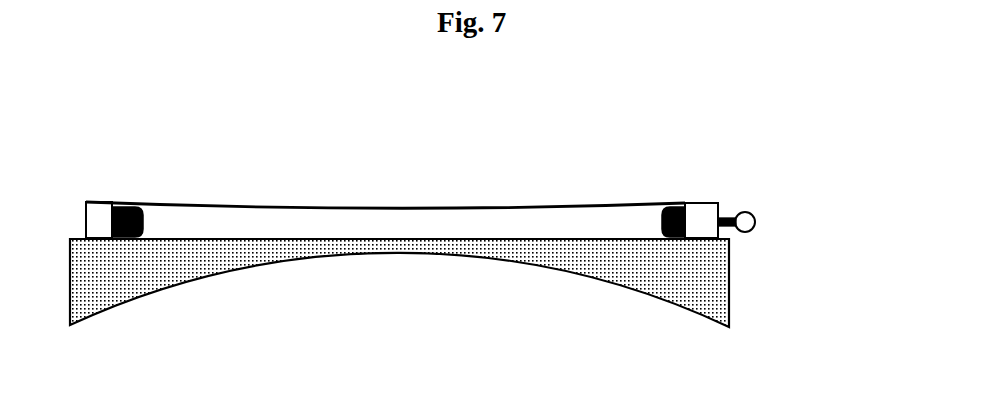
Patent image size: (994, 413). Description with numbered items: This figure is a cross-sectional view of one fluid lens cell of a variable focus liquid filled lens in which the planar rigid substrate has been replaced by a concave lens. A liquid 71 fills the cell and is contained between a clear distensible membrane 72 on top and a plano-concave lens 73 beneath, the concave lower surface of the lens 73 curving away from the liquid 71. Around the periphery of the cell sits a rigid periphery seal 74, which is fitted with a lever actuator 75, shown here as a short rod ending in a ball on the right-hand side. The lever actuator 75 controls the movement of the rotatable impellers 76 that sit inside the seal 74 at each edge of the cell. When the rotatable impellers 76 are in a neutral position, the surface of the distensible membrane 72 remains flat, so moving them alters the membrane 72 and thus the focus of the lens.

The liquid 71 is at (337, 232).
The clear distensible membrane 72 is at (502, 207).
The plano-concave lens 73 is at (700, 287).
The frame 74 is at (710, 213).
The lever actuator 75 is at (757, 217).
The rotatable impellers 76 is at (475, 222).